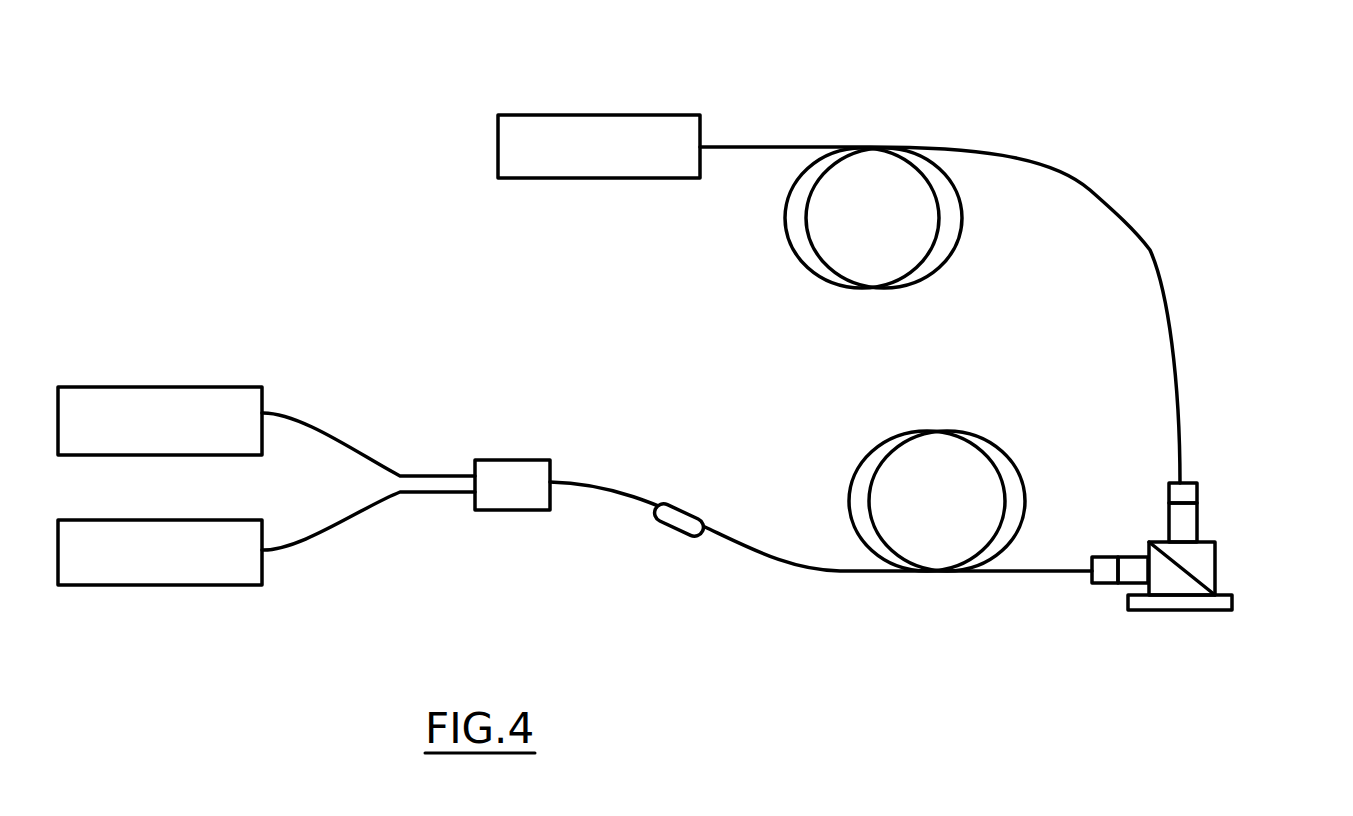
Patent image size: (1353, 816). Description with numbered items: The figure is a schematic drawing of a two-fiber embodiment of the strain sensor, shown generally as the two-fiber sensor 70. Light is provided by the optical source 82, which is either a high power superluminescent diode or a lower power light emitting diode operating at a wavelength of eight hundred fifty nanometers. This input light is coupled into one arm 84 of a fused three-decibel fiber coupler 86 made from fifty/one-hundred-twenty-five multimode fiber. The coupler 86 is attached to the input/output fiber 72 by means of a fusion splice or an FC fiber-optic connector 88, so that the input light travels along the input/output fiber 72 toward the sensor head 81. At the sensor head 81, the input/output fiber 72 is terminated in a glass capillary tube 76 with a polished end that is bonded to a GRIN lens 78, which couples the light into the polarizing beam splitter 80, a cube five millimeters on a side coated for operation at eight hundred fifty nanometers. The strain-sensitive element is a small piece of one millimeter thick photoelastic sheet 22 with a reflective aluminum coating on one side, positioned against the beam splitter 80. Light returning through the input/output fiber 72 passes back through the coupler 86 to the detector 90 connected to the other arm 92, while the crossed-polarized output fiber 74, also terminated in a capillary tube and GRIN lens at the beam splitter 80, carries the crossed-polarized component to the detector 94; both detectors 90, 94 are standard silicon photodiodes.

The two-fiber sensor 70 is at (1080, 148).
The detector 94 is at (608, 115).
The crossed-polarized output fiber 74 is at (1150, 250).
The optical source 82 is at (172, 387).
The detector 90 is at (142, 588).
The arm 84 is at (328, 436).
The arm 92 is at (315, 537).
The fused 3-dB fiber coupler 86 is at (487, 512).
The fusion splice or FC fiber-optic connector 88 is at (686, 510).
The input/output fiber 72 is at (770, 555).
The sensor head 81 is at (1143, 564).
The glass capillary tube 76 is at (1105, 565).
The GRIN lens 78 is at (1130, 565).
The polarizing beam splitter 80 is at (1215, 567).
The photoelastic sheet 22 is at (1232, 605).